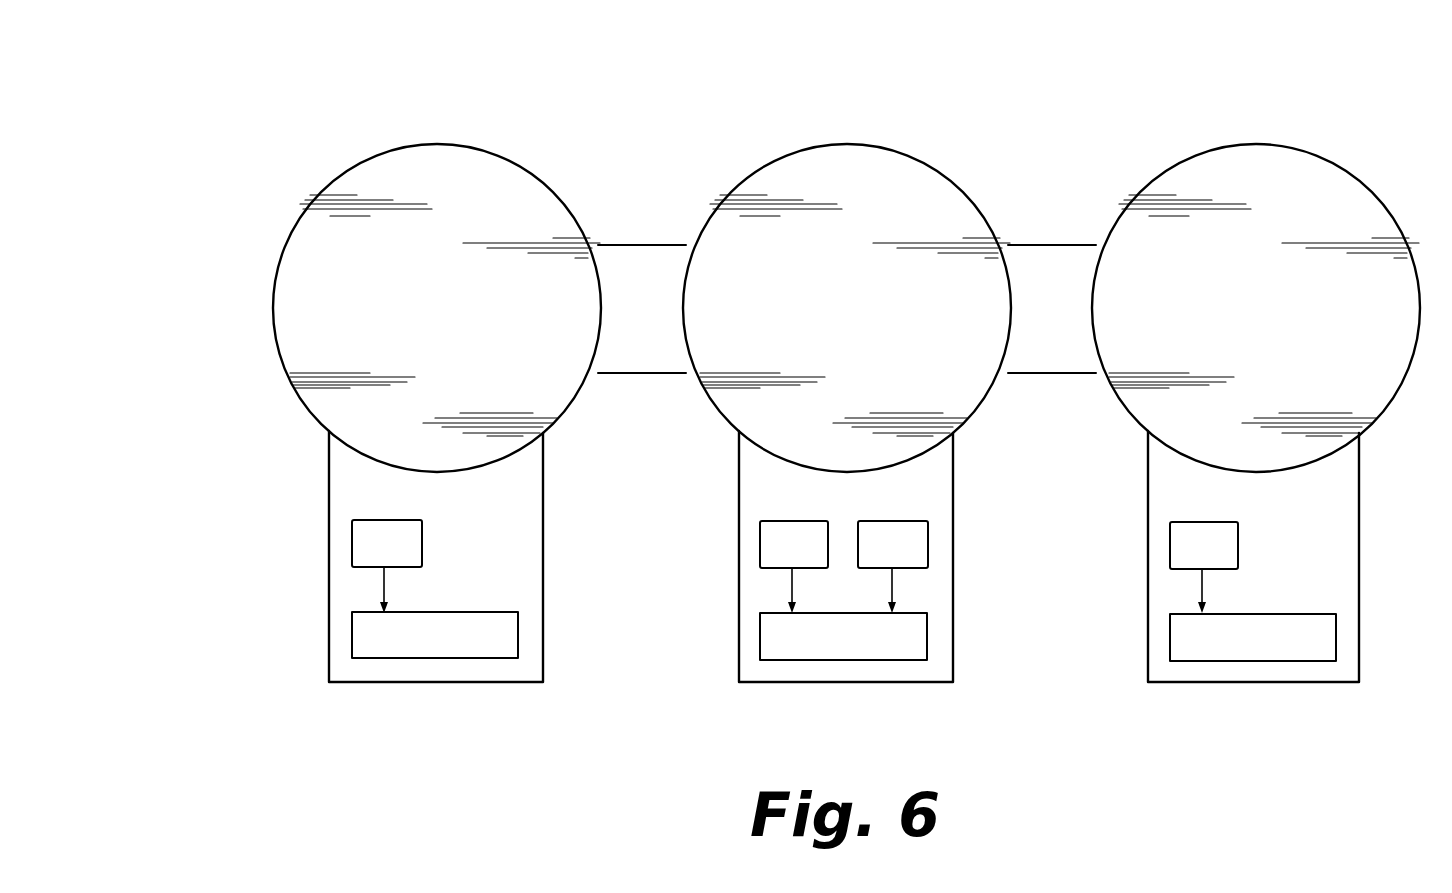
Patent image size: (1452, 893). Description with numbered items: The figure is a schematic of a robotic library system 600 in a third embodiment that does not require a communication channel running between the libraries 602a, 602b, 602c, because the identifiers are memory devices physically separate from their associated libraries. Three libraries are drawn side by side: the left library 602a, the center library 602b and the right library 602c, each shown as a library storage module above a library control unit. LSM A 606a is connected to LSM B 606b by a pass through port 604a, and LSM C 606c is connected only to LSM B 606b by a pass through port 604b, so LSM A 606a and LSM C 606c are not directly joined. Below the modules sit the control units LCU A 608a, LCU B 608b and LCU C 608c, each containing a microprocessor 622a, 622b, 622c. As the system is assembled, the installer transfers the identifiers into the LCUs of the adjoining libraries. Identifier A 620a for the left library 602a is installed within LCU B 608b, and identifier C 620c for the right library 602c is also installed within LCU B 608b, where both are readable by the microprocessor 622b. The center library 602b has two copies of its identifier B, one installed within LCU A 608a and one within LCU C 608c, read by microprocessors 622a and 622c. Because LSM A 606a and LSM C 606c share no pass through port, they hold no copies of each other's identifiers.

The robotic library system 600 is at (238, 183).
The left library 602a is at (607, 101).
The center library 602b is at (1017, 101).
The right library 602c is at (1427, 101).
The pass through port 604a is at (642, 255).
The pass through port 604b is at (1047, 255).
The LSM A 606a is at (437, 308).
The LSM B 606b is at (847, 308).
The LSM C 606c is at (1256, 308).
The LCU A 608a is at (329, 657).
The LCU B 608b is at (739, 658).
The LCU C 608c is at (1148, 658).
The identifier A 620a is at (760, 544).
The identifier C 620c is at (928, 548).
The microprocessor 622a is at (433, 658).
The microprocessor 622b is at (841, 661).
The microprocessor 622c is at (1249, 661).